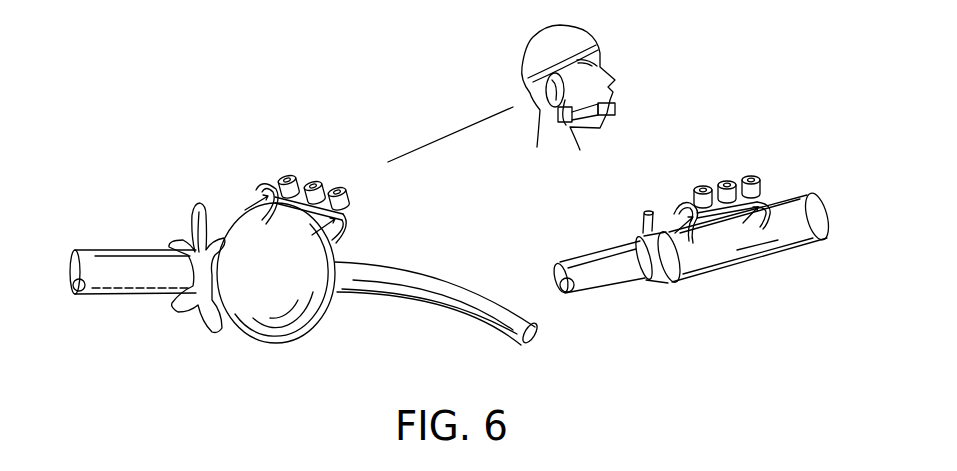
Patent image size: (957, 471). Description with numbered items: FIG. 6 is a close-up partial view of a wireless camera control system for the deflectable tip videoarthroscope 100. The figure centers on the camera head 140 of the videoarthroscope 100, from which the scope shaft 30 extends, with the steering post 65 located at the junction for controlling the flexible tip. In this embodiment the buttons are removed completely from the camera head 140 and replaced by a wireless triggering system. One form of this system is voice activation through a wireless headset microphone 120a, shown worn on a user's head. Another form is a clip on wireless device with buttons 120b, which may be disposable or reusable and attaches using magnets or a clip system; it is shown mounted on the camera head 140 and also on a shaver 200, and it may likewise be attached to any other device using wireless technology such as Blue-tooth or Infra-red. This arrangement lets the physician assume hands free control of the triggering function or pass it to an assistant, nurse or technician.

The scope shaft 30 is at (107, 265).
The steering post 65 is at (197, 223).
The deflectable tip videoarthroscope 100 is at (305, 295).
The wireless headset microphone 120a is at (616, 105).
The clip on wireless device with buttons 120b is at (313, 178).
The camera head 140 is at (233, 338).
The shaver 200 is at (710, 287).